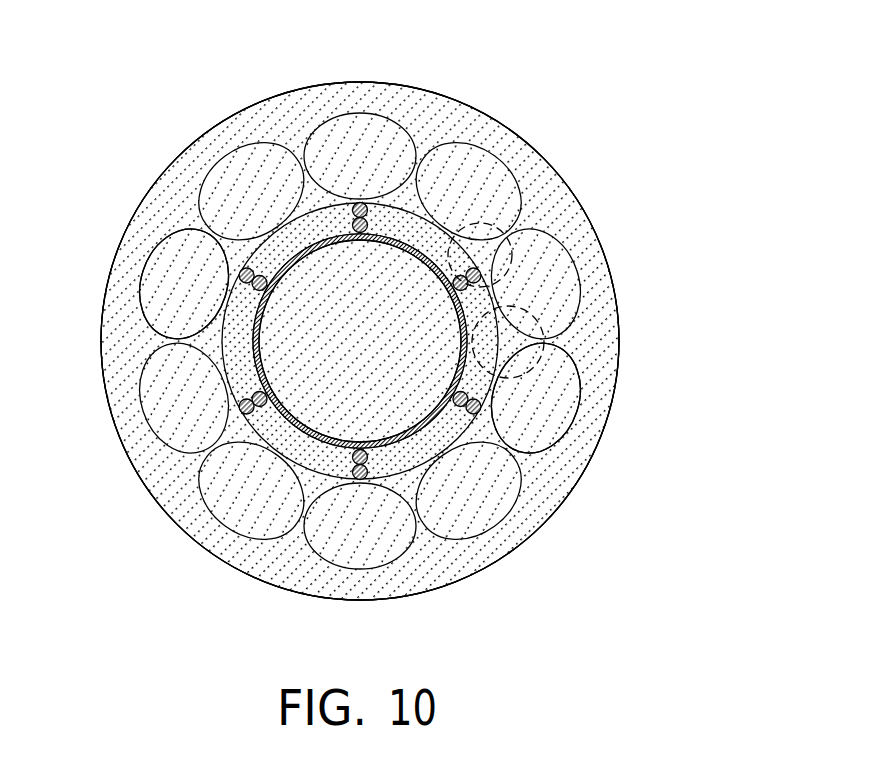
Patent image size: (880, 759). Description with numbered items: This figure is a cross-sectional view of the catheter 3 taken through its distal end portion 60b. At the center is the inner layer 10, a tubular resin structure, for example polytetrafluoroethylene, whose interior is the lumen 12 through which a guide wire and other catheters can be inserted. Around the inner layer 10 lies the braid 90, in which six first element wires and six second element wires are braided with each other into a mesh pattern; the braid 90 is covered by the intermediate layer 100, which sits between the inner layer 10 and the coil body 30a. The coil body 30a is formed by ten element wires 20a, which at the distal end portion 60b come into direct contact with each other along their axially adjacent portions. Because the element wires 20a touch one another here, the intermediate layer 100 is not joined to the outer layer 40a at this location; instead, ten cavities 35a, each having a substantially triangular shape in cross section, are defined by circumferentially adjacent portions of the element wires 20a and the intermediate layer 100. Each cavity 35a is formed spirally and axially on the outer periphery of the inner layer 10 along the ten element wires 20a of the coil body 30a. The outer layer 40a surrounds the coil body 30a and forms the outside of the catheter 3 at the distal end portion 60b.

The catheter 3 is at (506, 49).
The inner layer 10 is at (460, 335).
The lumen 12 is at (412, 402).
The element wires 20a is at (542, 403).
The coil body 30a is at (542, 403).
The cavities 35a is at (505, 250).
The outer layer 40a is at (542, 210).
The distal end portion 60b is at (247, 103).
The braid 90 is at (238, 275).
The intermediate layer 100 is at (280, 255).